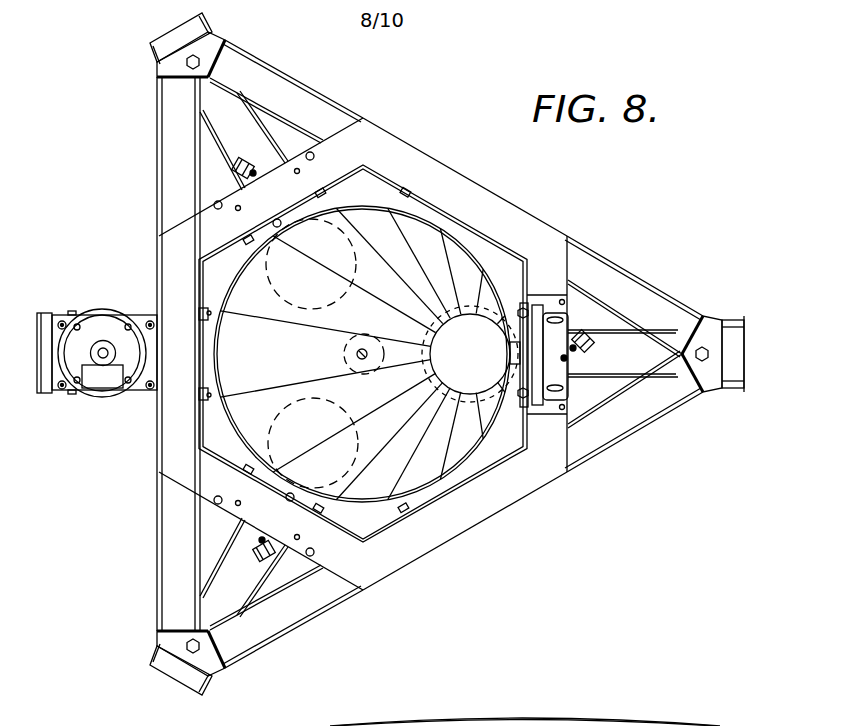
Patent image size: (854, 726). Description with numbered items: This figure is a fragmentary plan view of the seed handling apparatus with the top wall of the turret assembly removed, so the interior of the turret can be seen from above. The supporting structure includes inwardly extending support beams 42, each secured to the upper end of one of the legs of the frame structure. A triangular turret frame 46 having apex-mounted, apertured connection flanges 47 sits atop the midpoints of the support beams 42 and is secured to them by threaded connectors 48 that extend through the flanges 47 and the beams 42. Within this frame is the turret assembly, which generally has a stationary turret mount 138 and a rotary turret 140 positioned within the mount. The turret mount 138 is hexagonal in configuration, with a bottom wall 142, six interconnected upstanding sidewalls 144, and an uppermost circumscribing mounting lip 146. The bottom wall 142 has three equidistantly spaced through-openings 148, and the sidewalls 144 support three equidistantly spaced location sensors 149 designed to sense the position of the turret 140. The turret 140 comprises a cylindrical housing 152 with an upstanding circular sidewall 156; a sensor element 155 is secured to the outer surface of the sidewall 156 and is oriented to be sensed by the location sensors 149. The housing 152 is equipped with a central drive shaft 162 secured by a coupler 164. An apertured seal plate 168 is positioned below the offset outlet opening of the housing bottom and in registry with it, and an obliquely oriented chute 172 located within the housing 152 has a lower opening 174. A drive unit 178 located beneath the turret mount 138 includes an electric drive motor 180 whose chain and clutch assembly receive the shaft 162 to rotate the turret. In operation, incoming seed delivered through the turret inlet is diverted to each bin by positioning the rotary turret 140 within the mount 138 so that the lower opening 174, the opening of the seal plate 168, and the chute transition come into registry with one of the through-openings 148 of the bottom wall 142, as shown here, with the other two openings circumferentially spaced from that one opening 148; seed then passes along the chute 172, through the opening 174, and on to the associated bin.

The support beam 42 is at (170, 33).
The triangular turret frame 46 is at (150, 549).
The connection flange 47 is at (213, 38).
The threaded connector 48 is at (187, 67).
The stationary turret mount 138 is at (347, 133).
The rotary turret 140 is at (423, 207).
The bottom wall 142 is at (373, 518).
The sidewall 144 is at (507, 462).
The mounting lip 146 is at (557, 442).
The through-opening 148 is at (322, 275).
The location sensor 149 is at (233, 173).
The cylindrical housing 152 is at (440, 493).
The sensor element 155 is at (507, 357).
The circular sidewall 156 is at (215, 357).
The central drive shaft 162 is at (350, 344).
The coupler 164 is at (347, 363).
The seal plate 168 is at (520, 303).
The chute 172 is at (210, 432).
The lower opening 174 is at (447, 333).
The drive unit 178 is at (93, 416).
The electric drive motor 180 is at (112, 328).